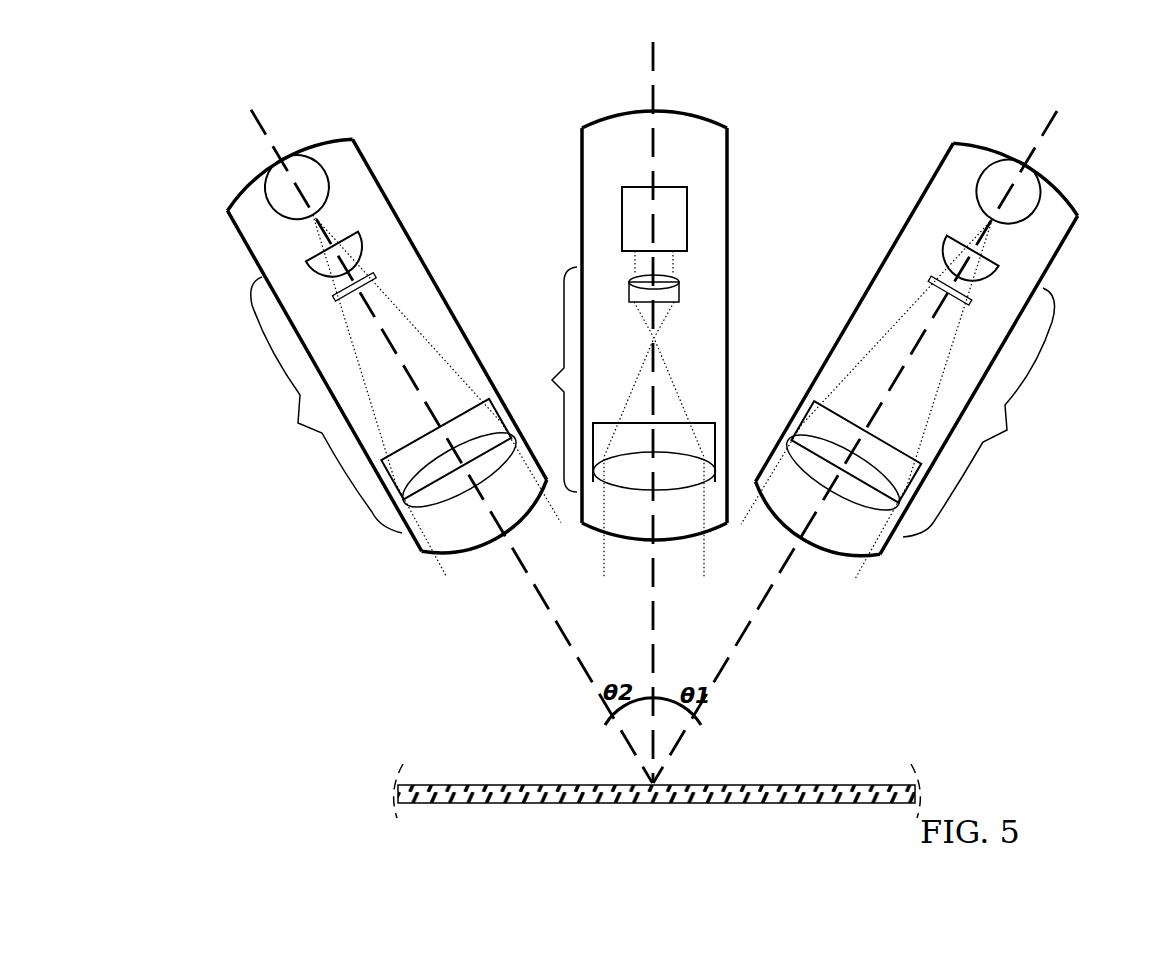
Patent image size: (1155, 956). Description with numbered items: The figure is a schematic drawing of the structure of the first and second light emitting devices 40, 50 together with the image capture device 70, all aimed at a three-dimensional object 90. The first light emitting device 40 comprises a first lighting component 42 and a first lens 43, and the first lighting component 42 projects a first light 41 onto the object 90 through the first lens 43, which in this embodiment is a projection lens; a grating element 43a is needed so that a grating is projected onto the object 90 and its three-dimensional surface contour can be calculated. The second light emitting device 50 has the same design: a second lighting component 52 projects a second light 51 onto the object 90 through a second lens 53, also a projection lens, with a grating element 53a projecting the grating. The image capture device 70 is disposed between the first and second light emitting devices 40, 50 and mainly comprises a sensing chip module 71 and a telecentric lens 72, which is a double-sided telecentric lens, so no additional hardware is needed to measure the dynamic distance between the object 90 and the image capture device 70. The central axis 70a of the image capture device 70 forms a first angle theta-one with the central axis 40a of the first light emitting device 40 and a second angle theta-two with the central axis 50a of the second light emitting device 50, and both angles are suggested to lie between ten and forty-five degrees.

The second light emitting device 50 is at (357, 142).
The second lighting component 52 is at (293, 203).
The grating element 53a is at (372, 282).
The second lens 53 is at (326, 405).
The second light 51 is at (468, 553).
The central axis of the second light emitting device 50a is at (567, 652).
The image capture device 70 is at (693, 114).
The sensing chip module 71 is at (670, 210).
The telecentric lens 72 is at (617, 379).
The central axis of the image capture device 70a is at (654, 618).
The first light emitting device 40 is at (952, 150).
The first lighting component 42 is at (1030, 196).
The grating element 43a is at (933, 280).
The first lens 43 is at (979, 412).
The first light 41 is at (822, 555).
The central axis of the first light emitting device 40a is at (737, 661).
The 3D object 90 is at (445, 785).